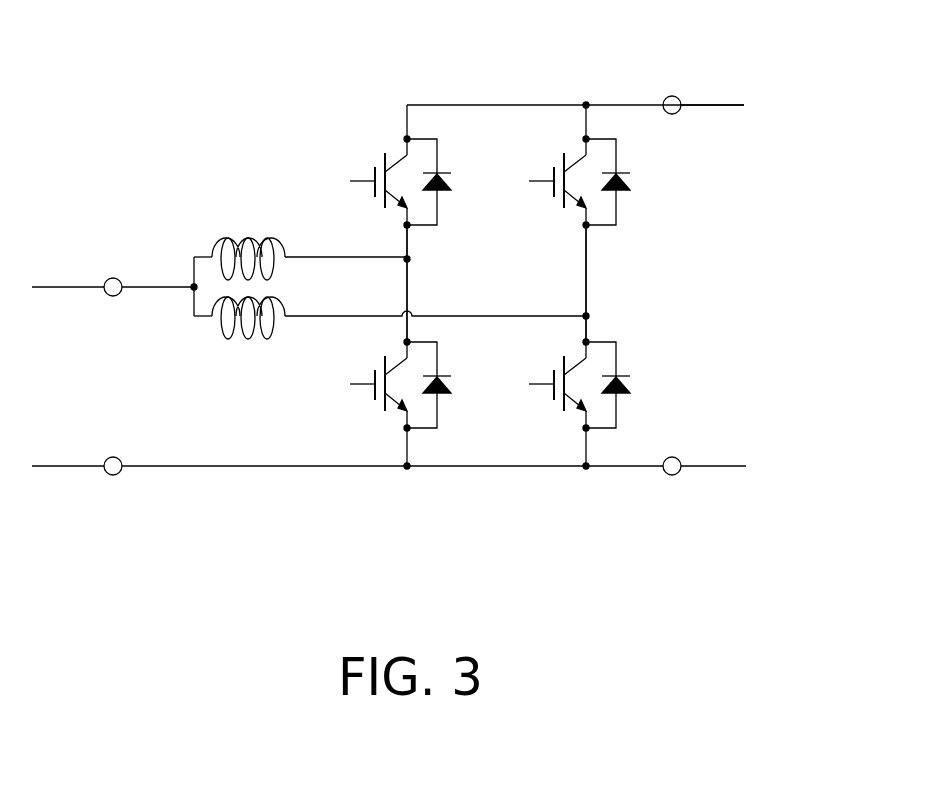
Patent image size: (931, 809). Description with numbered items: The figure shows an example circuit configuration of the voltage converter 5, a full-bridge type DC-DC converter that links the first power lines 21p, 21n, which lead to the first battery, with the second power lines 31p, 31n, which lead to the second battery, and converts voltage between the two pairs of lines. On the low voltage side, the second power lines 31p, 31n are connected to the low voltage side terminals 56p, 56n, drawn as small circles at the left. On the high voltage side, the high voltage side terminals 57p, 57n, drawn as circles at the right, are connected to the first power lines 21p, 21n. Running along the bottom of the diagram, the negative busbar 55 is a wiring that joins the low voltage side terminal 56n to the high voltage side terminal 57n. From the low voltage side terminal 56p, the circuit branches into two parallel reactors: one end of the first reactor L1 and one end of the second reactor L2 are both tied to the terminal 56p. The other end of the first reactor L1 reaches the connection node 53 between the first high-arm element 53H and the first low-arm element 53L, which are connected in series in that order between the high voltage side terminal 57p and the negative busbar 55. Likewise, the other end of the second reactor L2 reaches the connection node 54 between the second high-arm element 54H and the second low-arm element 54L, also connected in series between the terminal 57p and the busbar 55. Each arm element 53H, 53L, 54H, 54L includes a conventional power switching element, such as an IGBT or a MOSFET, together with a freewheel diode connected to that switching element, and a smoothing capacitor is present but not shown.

The voltage converter 5 is at (188, 69).
The second power line 31p is at (48, 287).
The second power line 31n is at (48, 466).
The low voltage side terminal 56p is at (116, 278).
The low voltage side terminal 56n is at (117, 457).
The first reactor L1 is at (262, 238).
The second reactor L2 is at (249, 337).
The connection node 53 is at (410, 259).
The connection node 54 is at (590, 316).
The first high-arm element 53H is at (345, 151).
The first low-arm element 53L is at (331, 367).
The second high-arm element 54H is at (518, 157).
The second low-arm element 54L is at (518, 367).
The negative busbar 55 is at (306, 466).
The high voltage side terminal 57p is at (676, 96).
The high voltage side terminal 57n is at (676, 457).
The first power line 21p is at (728, 105).
The first power line 21n is at (730, 466).